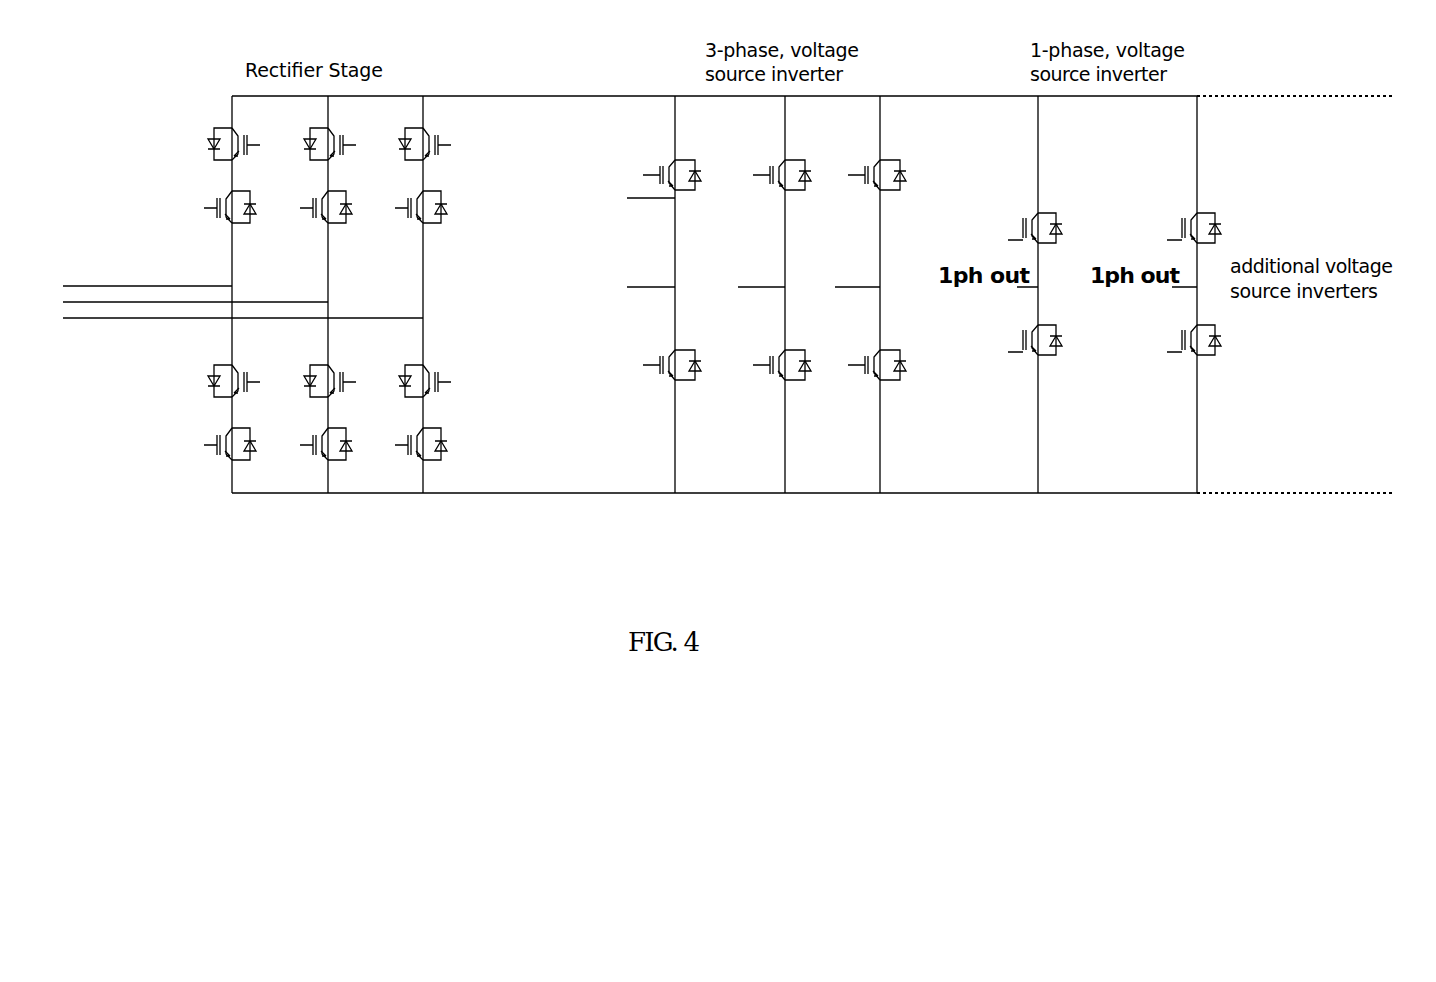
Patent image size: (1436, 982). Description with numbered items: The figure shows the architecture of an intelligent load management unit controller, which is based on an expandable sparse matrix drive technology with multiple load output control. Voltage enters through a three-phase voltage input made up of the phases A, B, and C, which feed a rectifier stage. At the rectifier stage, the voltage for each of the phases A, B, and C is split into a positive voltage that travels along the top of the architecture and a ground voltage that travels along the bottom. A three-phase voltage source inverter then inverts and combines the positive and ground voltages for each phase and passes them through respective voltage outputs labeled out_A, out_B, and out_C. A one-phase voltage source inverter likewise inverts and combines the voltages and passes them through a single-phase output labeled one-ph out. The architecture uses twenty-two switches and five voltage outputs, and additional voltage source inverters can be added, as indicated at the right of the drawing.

The 3-phase voltage input phase A is at (136, 273).
The 3-phase voltage input phase B is at (184, 297).
The 3-phase voltage input phase C is at (232, 323).